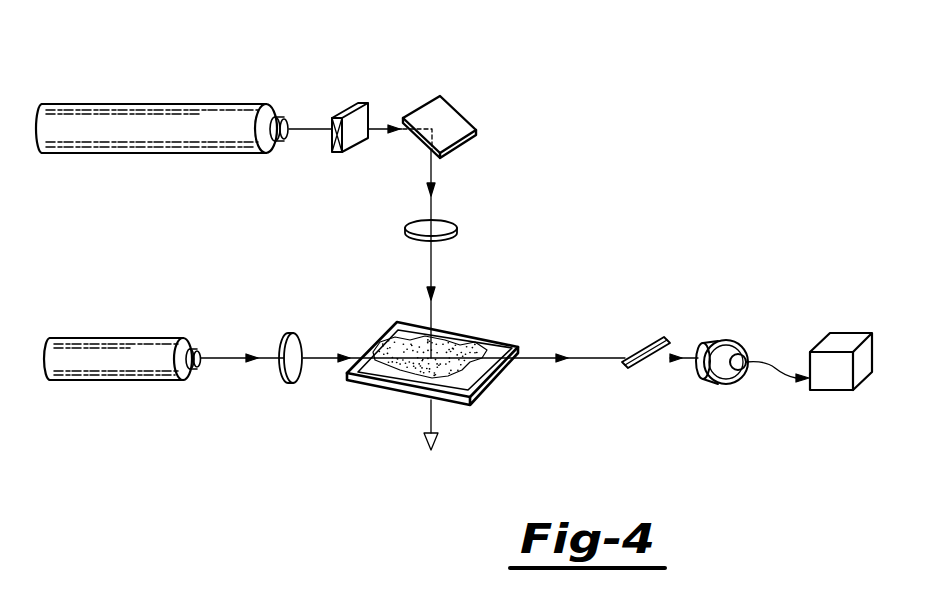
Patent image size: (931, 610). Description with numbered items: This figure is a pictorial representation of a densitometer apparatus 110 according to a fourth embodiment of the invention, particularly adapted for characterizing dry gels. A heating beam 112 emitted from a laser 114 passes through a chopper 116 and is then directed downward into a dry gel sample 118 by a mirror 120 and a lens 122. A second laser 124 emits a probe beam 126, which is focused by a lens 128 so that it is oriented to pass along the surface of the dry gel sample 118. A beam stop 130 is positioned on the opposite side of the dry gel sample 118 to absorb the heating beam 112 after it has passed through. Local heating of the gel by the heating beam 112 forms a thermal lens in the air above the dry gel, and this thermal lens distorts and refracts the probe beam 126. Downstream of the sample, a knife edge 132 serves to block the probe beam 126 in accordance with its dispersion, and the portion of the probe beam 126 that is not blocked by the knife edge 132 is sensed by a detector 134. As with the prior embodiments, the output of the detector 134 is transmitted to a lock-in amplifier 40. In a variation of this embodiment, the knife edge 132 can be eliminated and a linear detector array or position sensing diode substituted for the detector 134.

The densitometer apparatus 110 is at (550, 166).
The heating beam 112 is at (430, 199).
The laser 114 is at (188, 117).
The chopper 116 is at (352, 104).
The dry gel sample 118 is at (463, 352).
The mirror 120 is at (447, 113).
The lens 122 is at (458, 232).
The laser 124 is at (145, 338).
The probe beam 126 is at (258, 356).
The lens 128 is at (292, 382).
The beam stop 130 is at (432, 450).
The knife edge 132 is at (663, 340).
The detector 134 is at (738, 346).
The lock-in amplifier 40 is at (823, 384).